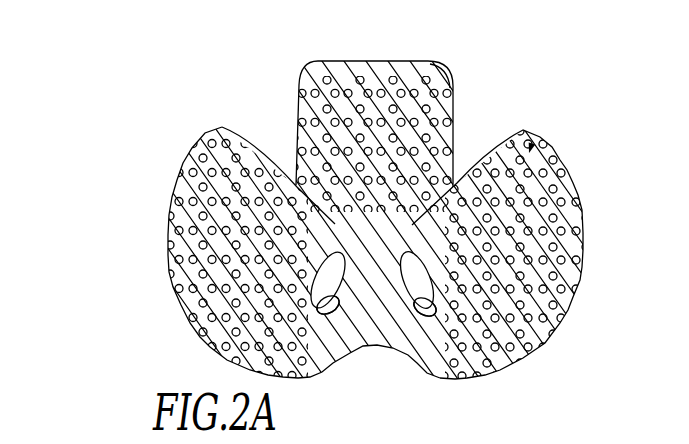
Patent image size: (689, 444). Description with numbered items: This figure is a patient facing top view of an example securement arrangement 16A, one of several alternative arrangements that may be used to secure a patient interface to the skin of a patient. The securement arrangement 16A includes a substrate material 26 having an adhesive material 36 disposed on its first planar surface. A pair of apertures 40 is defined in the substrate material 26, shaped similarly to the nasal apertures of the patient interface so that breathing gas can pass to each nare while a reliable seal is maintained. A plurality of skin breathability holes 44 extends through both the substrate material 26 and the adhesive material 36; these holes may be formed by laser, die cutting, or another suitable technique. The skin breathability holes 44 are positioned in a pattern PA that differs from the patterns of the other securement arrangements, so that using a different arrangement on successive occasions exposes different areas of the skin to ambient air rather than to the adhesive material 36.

The securement arrangement 16A is at (136, 173).
The substrate material 26 is at (585, 258).
The adhesive material 36 is at (393, 61).
The apertures 40 is at (338, 313).
The skin breathability holes 44 is at (574, 188).
The pattern PA is at (531, 145).